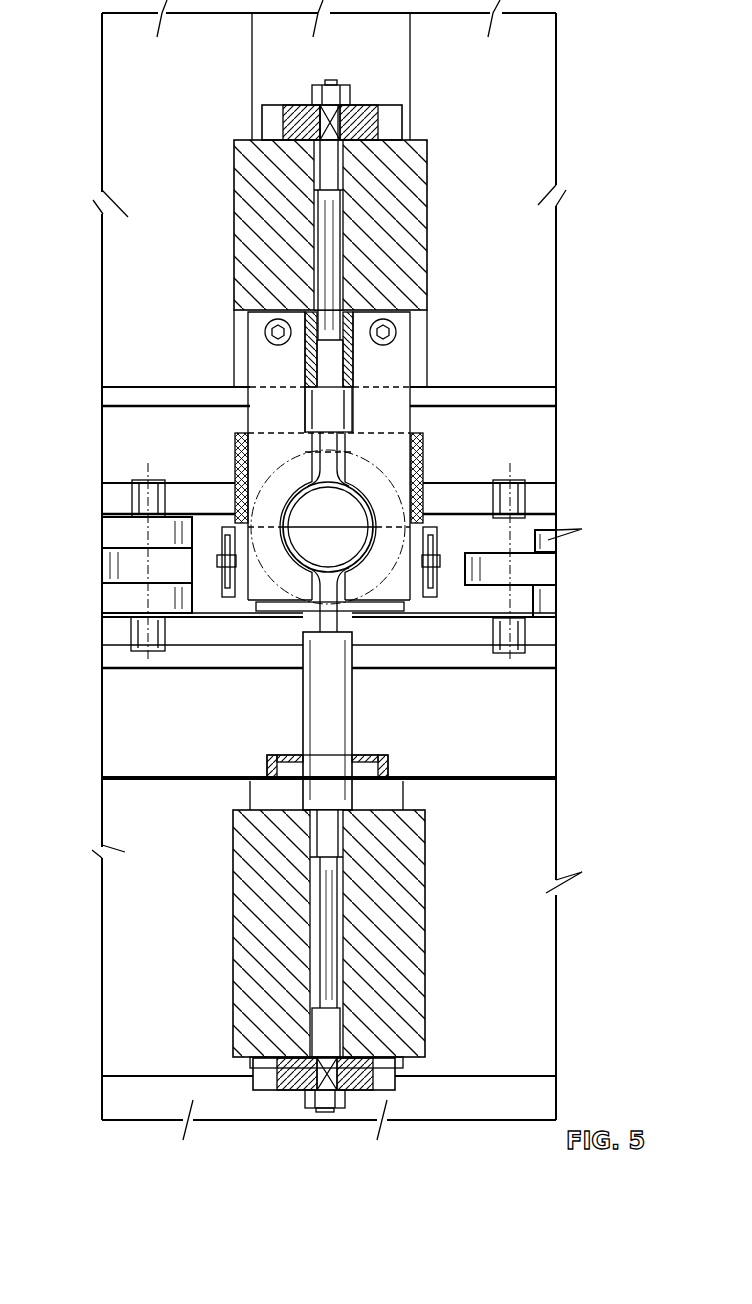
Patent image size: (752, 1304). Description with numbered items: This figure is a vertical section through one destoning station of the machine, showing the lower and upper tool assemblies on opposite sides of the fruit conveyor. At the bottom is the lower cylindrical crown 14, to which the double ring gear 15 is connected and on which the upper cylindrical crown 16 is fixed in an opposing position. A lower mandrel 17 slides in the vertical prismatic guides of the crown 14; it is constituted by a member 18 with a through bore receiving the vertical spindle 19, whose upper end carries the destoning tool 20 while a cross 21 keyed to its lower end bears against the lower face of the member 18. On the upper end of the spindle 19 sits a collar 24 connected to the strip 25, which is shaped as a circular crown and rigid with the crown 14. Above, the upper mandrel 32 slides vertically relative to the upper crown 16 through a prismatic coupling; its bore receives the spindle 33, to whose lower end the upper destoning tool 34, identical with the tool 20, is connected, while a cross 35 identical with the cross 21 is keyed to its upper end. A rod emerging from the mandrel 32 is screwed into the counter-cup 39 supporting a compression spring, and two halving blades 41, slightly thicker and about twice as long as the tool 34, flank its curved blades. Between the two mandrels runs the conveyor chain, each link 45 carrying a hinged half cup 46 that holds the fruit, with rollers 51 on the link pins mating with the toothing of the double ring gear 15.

The cylindrical crown 14 is at (103, 930).
The double ring gear 15 is at (110, 497).
The upper cylindrical crown 16 is at (103, 134).
The mandrels 17 is at (231, 877).
The member 18 is at (418, 897).
The spindle 19 is at (326, 993).
The destoning tool 20 is at (338, 608).
The cross 21 is at (289, 1089).
The collar 24 is at (392, 766).
The strip 25 is at (556, 781).
The upper mandrels 32 is at (232, 203).
The spindle 33 is at (332, 262).
The destoning tool 34 is at (351, 487).
The cross 35 is at (363, 106).
The counter-cup 39 is at (422, 470).
The halving blades 41 is at (258, 352).
The link 45 is at (103, 573).
The half cup 46 is at (229, 596).
The rollers 51 is at (140, 478).